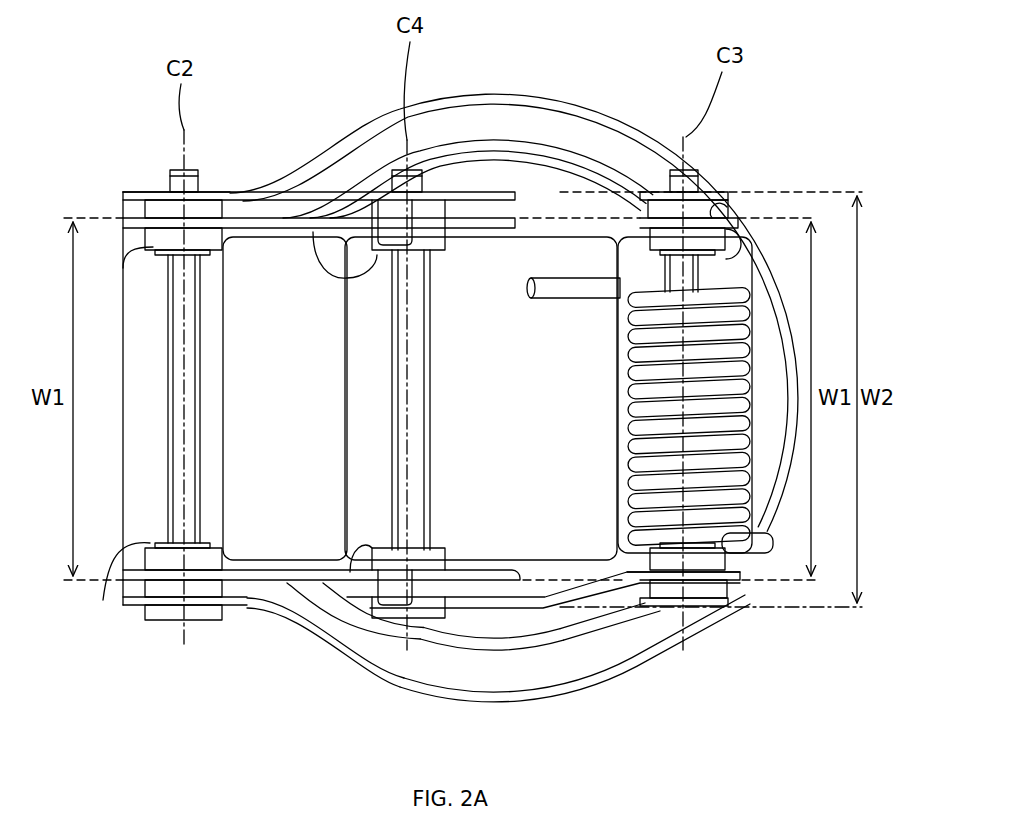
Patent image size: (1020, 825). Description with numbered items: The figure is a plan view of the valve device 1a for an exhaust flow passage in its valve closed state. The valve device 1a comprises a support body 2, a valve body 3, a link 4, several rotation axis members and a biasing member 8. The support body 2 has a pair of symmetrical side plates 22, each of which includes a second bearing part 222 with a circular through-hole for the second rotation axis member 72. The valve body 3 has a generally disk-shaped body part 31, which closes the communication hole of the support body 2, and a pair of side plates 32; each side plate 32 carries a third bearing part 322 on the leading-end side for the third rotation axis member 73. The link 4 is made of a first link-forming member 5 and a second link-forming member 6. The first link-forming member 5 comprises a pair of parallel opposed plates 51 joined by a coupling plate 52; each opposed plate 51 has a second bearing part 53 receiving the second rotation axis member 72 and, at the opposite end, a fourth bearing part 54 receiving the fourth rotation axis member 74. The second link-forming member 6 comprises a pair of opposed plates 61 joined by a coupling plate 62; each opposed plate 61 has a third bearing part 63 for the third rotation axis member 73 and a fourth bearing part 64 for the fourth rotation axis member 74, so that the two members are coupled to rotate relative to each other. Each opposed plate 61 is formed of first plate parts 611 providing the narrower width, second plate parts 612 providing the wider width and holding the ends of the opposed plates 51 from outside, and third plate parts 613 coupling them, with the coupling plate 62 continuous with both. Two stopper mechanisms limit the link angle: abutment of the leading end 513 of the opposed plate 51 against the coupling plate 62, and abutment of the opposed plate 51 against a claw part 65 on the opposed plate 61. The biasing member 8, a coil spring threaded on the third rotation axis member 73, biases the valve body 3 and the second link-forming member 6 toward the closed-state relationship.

The valve device 1a is at (752, 85).
The support body 2 is at (322, 660).
The side plate 22 is at (140, 192).
The second bearing part 222 is at (143, 607).
The valve body 3 is at (533, 660).
The body part 31 is at (513, 627).
The side plate 32 is at (718, 190).
The third bearing part 322 is at (723, 615).
The link 4 is at (470, 188).
The first link-forming member 5 is at (243, 607).
The opposed plate 51 is at (248, 200).
The coupling plate 52 is at (282, 300).
The leading end 513 is at (503, 220).
The second bearing part 53 is at (150, 262).
The fourth bearing part 54 is at (312, 230).
The second link-forming member 6 is at (598, 655).
The opposed plate 61 is at (393, 218).
The first plate part 611 is at (730, 208).
The second plate part 612 is at (497, 192).
The third plate part 613 is at (612, 150).
The coupling plate 62 is at (553, 258).
The third bearing part 63 is at (740, 240).
The fourth bearing part 64 is at (416, 620).
The claw part 65 is at (400, 205).
The second rotation axis member 72 is at (178, 410).
The third rotation axis member 73 is at (700, 272).
The fourth rotation axis member 74 is at (397, 470).
The biasing member 8 is at (750, 380).